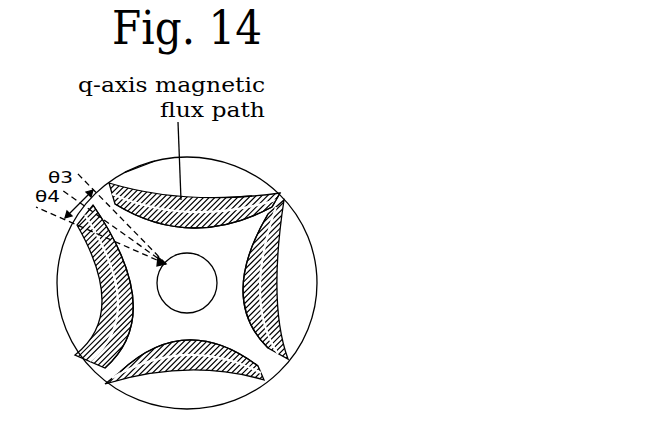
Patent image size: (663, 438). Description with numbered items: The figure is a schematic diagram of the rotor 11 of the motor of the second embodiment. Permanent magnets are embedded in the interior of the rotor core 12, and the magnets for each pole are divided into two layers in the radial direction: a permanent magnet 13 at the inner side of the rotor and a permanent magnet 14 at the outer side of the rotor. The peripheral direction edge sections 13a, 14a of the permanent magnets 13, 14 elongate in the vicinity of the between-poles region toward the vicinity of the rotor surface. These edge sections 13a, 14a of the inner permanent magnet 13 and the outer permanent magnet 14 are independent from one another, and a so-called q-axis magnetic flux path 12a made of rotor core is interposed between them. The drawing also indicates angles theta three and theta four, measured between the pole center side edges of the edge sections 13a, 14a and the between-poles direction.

The rotor 11 is at (263, 352).
The rotor core 12 is at (227, 303).
The q-axis magnetic flux path 12a is at (142, 182).
The permanent magnet 13 is at (232, 220).
The peripheral direction edge section 13a is at (271, 188).
The permanent magnet 14 is at (197, 200).
The peripheral direction edge section 14a is at (245, 183).